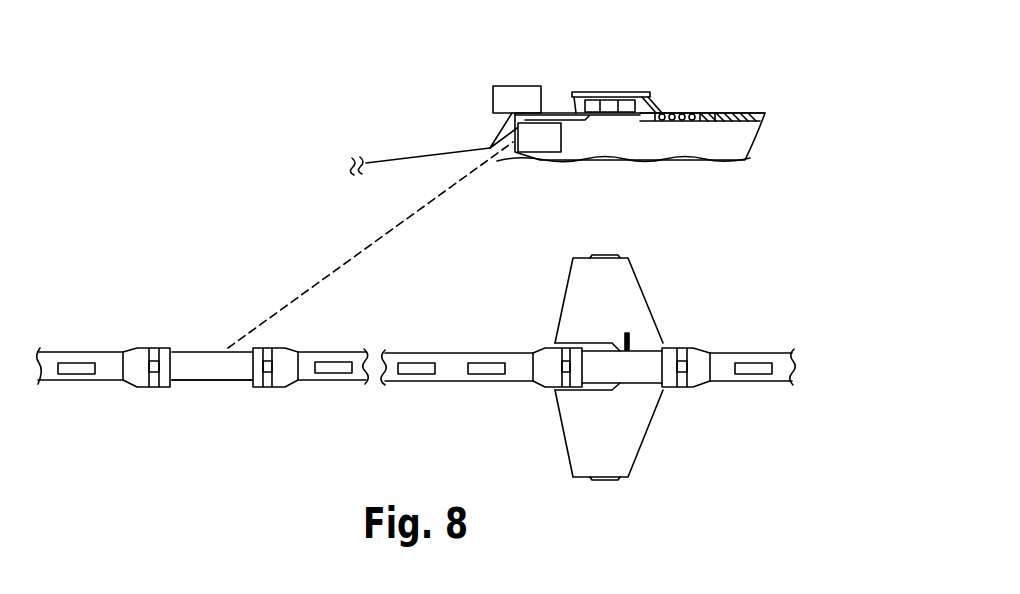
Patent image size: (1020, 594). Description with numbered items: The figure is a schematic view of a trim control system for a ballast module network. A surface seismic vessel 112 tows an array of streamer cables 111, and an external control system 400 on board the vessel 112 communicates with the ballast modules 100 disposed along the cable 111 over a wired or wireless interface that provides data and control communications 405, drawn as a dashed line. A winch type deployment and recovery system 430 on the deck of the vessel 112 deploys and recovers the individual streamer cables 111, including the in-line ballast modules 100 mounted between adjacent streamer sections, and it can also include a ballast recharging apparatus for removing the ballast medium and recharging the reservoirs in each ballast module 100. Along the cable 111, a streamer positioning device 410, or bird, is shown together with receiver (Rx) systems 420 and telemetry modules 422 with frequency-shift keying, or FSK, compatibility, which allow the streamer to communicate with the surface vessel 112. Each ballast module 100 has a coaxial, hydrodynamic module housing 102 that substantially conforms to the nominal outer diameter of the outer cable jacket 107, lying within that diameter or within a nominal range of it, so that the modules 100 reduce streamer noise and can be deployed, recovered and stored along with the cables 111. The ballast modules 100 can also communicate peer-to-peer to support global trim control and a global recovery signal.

The vessel 112 is at (675, 95).
The deployment and recovery system 430 is at (517, 99).
The external control system 400 is at (539, 137).
The streamer cable 111 is at (416, 156).
The data and control communications 405 is at (370, 245).
The outer cable jacket 107 is at (50, 352).
The ballast module 100 is at (188, 352).
The module housing 102 is at (185, 387).
The streamer positioning device 410 is at (634, 300).
The receiver (Rx) system 420 is at (77, 376).
The telemetry module 422 is at (333, 375).